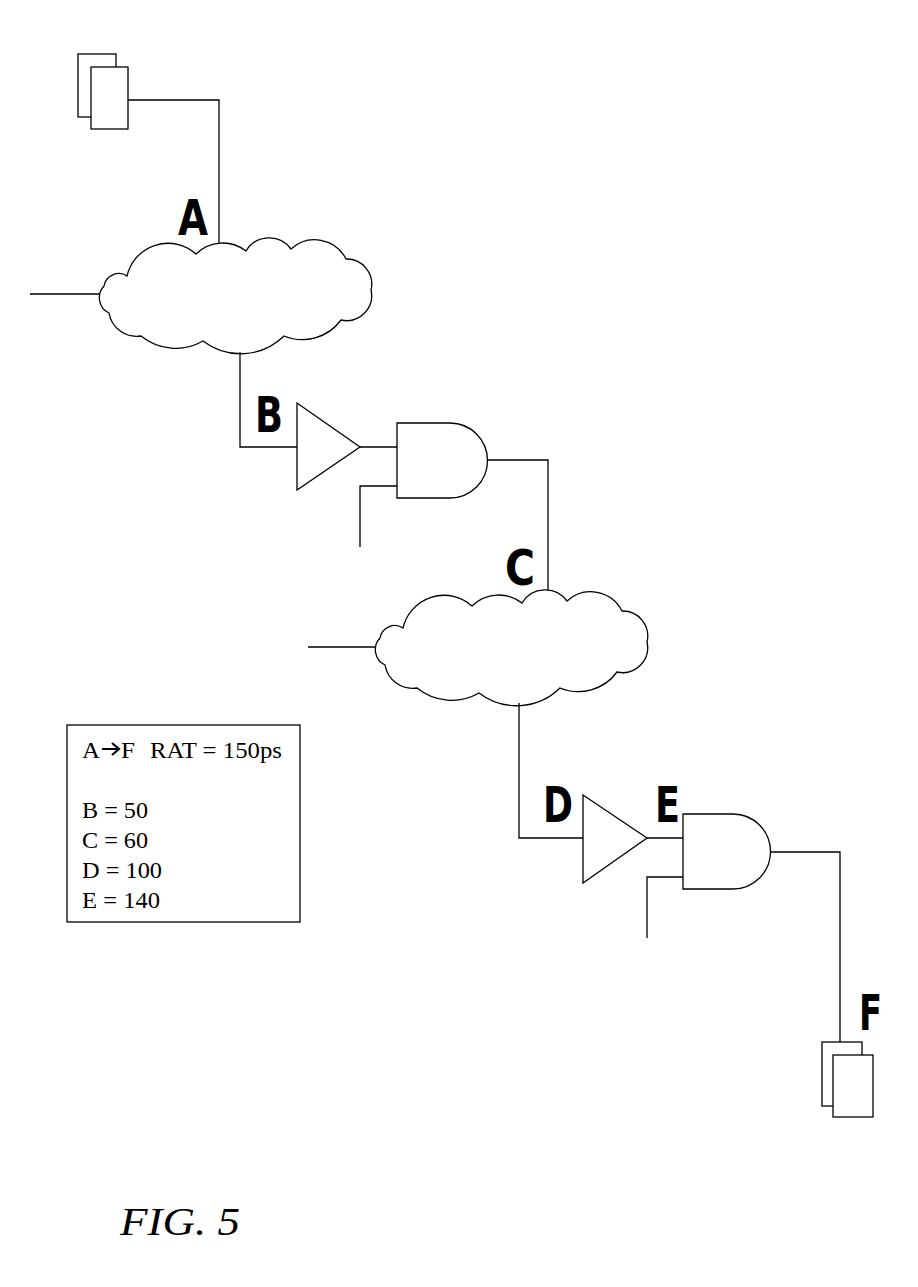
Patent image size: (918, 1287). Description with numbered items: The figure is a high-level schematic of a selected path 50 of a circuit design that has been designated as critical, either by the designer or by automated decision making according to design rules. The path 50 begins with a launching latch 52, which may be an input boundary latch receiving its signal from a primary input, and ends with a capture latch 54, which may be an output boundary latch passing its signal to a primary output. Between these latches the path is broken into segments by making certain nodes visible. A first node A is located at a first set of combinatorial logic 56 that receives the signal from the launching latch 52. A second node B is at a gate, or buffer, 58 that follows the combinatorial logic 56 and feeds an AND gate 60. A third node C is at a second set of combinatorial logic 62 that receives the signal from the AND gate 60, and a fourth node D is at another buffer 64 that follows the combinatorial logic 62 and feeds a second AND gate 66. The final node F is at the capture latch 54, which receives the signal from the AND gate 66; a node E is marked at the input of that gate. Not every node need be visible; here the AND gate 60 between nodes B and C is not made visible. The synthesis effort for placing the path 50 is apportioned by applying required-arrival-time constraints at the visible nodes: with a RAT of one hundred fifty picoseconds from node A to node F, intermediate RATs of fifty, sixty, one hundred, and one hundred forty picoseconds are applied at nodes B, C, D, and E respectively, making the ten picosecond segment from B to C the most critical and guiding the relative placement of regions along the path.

The selected path 50 is at (598, 229).
The launching latch 52 is at (105, 130).
The capture latch 54 is at (838, 1118).
The first set of combinatorial logic 56 is at (323, 238).
The gate (buffer) 58 is at (297, 470).
The AND gate 60 is at (437, 420).
The second set of combinatorial logic 62 is at (643, 617).
The gate (buffer) 64 is at (583, 868).
The AND gate 66 is at (708, 813).